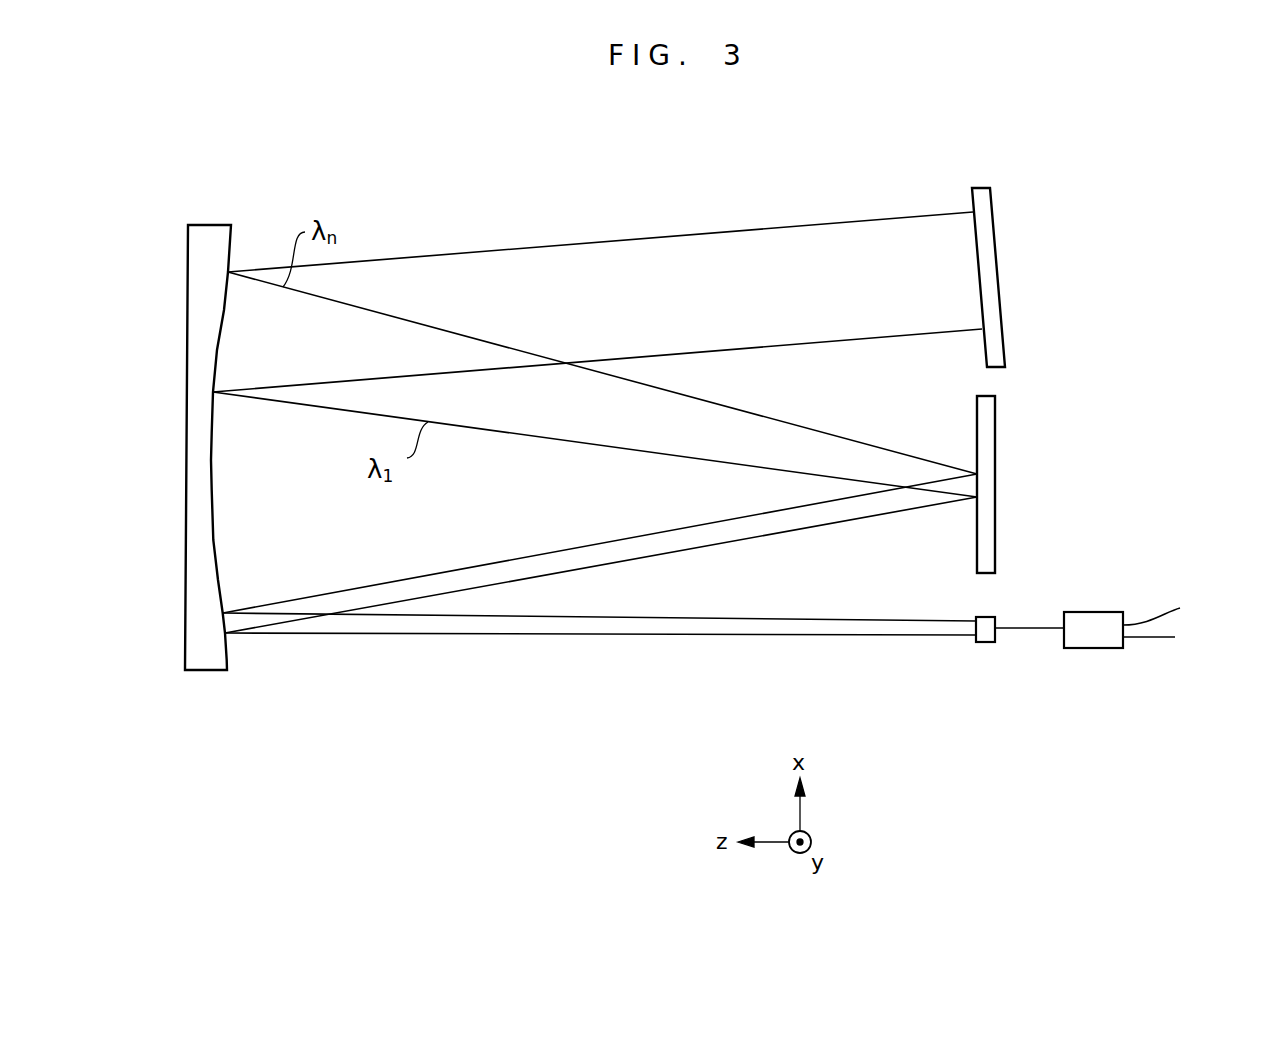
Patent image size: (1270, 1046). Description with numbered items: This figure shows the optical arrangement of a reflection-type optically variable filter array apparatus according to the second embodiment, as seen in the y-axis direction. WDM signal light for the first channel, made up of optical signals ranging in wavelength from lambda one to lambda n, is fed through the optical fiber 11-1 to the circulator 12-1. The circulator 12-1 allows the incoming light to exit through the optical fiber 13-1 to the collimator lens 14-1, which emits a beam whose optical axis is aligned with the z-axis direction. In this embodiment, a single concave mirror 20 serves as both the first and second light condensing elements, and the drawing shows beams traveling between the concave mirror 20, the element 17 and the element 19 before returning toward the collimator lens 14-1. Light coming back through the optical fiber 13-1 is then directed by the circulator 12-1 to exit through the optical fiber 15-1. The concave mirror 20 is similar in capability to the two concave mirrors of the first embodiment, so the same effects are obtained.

The concave mirror 20 is at (188, 270).
The mirror 19 is at (997, 245).
The diffraction grating 17 is at (997, 456).
The collimator lens 14-1 is at (982, 642).
The optical fiber 13-1 is at (1039, 628).
The circulator 12-1 is at (1098, 648).
The optical fiber 11-1 is at (1200, 591).
The optical fiber 15-1 is at (1200, 647).